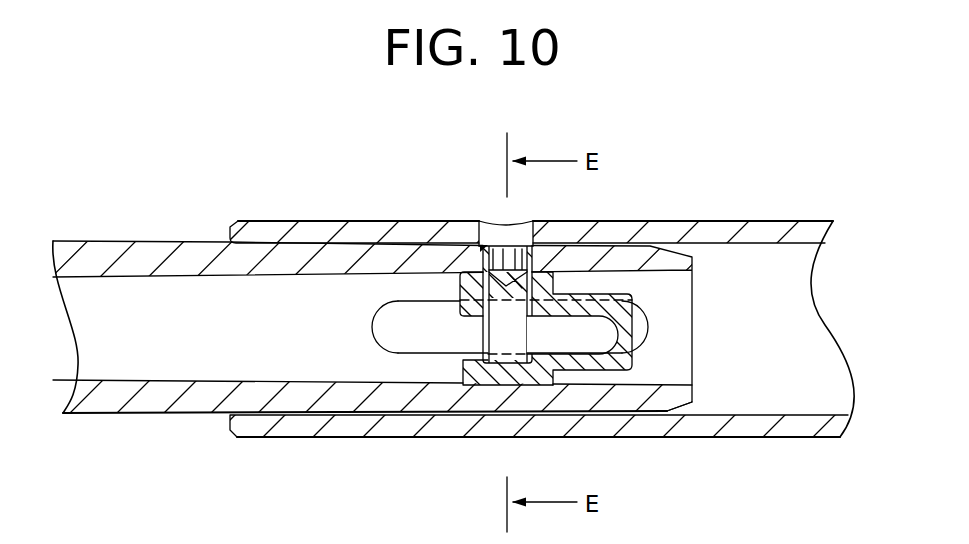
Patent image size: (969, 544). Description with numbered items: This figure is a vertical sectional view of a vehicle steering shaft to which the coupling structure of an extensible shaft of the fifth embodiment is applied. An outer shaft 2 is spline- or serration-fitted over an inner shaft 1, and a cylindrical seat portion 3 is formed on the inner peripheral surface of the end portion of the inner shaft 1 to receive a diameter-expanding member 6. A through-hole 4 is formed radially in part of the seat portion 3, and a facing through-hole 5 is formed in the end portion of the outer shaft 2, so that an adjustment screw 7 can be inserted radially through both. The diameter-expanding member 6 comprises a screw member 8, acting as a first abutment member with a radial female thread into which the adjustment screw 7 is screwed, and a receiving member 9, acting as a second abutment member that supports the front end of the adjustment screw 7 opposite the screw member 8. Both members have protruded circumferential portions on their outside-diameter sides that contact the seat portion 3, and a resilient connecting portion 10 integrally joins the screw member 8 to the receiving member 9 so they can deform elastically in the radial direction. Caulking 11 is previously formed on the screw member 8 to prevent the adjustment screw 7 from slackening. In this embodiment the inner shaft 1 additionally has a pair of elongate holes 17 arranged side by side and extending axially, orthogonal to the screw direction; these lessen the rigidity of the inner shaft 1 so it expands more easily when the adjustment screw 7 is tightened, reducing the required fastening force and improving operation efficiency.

The inner shaft 1 is at (137, 397).
The outer shaft 2 is at (738, 228).
The cylindrical seat portion 3 is at (667, 386).
The through-hole 4 is at (488, 240).
The through-hole 5 is at (508, 236).
The diameter-expanding member 6 is at (417, 320).
The adjustment screw 7 is at (545, 310).
The screw member 8 is at (460, 287).
The receiving member 9 is at (465, 372).
The connecting portion 10 is at (625, 320).
The caulking 11 is at (530, 322).
The elongate holes 17 is at (372, 338).